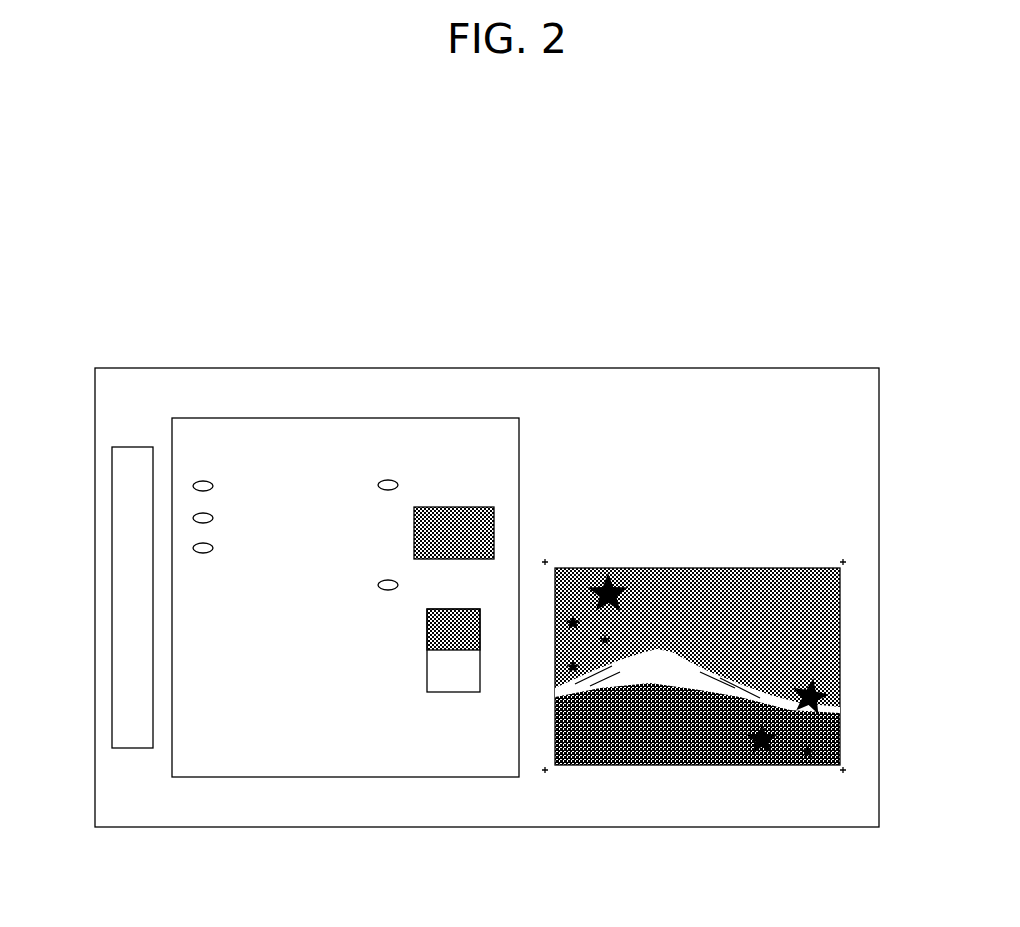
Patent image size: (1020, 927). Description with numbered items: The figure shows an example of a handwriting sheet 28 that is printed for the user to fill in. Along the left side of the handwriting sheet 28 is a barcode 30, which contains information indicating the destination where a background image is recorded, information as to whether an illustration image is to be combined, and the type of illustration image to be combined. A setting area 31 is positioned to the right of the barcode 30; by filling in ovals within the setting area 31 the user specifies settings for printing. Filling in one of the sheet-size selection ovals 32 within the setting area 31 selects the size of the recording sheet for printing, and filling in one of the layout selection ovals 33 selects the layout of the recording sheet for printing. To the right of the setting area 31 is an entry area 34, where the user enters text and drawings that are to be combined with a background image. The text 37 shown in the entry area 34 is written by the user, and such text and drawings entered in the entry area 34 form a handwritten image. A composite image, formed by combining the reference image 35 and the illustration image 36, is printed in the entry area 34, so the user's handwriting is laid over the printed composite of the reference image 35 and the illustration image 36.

The handwriting sheet 28 is at (139, 368).
The barcode 30 is at (144, 447).
The setting area 31 is at (519, 438).
The sheet-size selection ovals 32 is at (193, 548).
The layout selection ovals 33 is at (380, 581).
The entry area 34 is at (754, 600).
The reference image 35 is at (826, 643).
The illustration image 36 is at (614, 590).
The text 37 is at (736, 660).